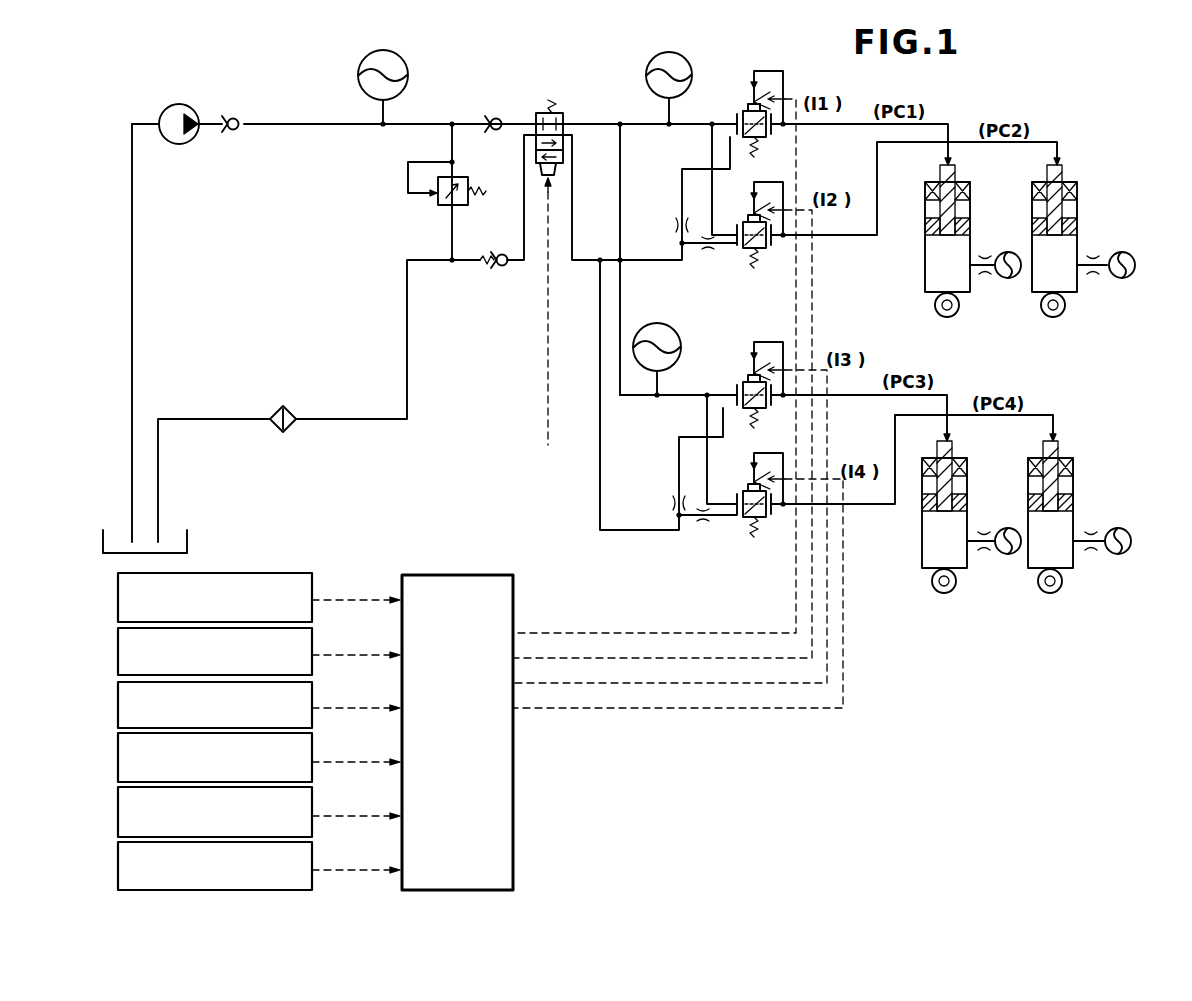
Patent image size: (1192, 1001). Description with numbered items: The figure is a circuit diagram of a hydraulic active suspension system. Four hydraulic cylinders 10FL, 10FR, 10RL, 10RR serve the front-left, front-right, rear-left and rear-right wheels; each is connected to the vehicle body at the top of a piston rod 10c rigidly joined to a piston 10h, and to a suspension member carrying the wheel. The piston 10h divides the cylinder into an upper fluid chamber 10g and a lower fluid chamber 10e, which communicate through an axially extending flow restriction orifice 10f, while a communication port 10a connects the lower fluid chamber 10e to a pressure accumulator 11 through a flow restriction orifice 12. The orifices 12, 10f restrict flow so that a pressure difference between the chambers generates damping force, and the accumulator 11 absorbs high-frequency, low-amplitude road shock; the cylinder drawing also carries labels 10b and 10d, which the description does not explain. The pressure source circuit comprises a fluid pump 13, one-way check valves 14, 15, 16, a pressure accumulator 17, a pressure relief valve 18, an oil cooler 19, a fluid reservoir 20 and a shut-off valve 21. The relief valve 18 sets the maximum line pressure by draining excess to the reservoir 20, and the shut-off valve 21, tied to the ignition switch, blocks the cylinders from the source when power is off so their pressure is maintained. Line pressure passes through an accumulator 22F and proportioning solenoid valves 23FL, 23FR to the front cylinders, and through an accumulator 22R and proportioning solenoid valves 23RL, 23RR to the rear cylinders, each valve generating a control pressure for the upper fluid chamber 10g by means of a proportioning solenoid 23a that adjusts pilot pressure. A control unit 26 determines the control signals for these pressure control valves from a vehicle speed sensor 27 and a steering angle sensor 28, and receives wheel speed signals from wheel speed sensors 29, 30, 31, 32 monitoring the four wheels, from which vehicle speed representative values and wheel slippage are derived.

The hydraulic cylinder 10FL is at (936, 302).
The hydraulic cylinder 10FR is at (1082, 252).
The hydraulic cylinder 10RL is at (930, 577).
The hydraulic cylinder 10RR is at (1074, 572).
The communication port 10a is at (1080, 272).
The piston rod 10b is at (1062, 168).
The piston rod 10c is at (1047, 180).
The rod guide 10d is at (1066, 174).
The lower fluid chamber 10e is at (1039, 298).
The axially extending flow restriction orifice 10f is at (1077, 235).
The upper fluid chamber 10g is at (1078, 210).
The piston 10h is at (1035, 225).
The pressure accumulator 11 is at (1136, 266).
The flow restriction orifice 12 is at (1097, 271).
The fluid pump 13 is at (175, 103).
The one-way check valve 14 is at (236, 116).
The one-way check valve 15 is at (492, 117).
The one-way check valve 16 is at (499, 270).
The pressure accumulator 17 is at (394, 61).
The pressure relief valve 18 is at (437, 195).
The oil cooler 19 is at (315, 416).
The fluid reservoir 20 is at (187, 541).
The shut-off valve 21 is at (541, 109).
The accumulator 22F is at (647, 62).
The accumulator 22R is at (670, 327).
The proportioning solenoid 23a is at (756, 100).
The proportioning solenoid valve 23FL is at (749, 120).
The proportioning solenoid valve 23FR is at (751, 266).
The proportioning solenoid valve 23RL is at (762, 418).
The proportioning solenoid valve 23RR is at (758, 543).
The control unit 26 is at (455, 575).
The vehicle speed sensor 27 is at (118, 602).
The steering angle sensor 28 is at (118, 655).
The wheel speed sensor 29 is at (118, 710).
The wheel speed sensor 30 is at (118, 764).
The wheel speed sensor 31 is at (115, 818).
The wheel speed sensor 32 is at (118, 872).